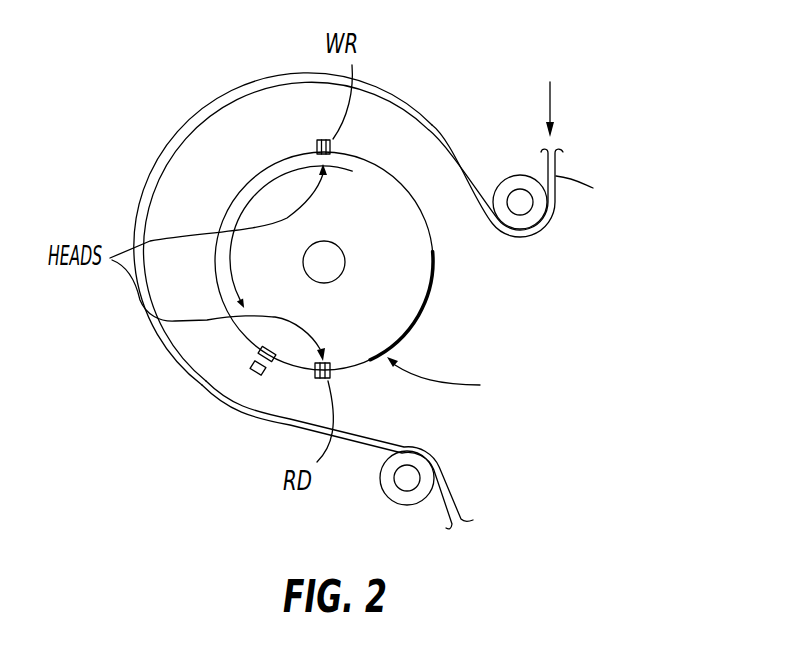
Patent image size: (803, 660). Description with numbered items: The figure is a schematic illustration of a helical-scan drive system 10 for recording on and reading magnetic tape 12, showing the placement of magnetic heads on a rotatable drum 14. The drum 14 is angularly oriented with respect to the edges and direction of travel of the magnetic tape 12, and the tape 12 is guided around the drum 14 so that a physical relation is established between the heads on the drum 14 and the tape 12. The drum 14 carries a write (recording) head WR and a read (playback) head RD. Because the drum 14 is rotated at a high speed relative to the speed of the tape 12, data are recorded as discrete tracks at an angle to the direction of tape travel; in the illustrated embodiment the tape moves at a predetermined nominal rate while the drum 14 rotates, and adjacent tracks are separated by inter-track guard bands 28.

The helical-scan drive system 10 is at (634, 340).
The magnetic tape 12 is at (272, 88).
The drum 14 is at (400, 338).
The inter-track guard bands 28 is at (250, 365).